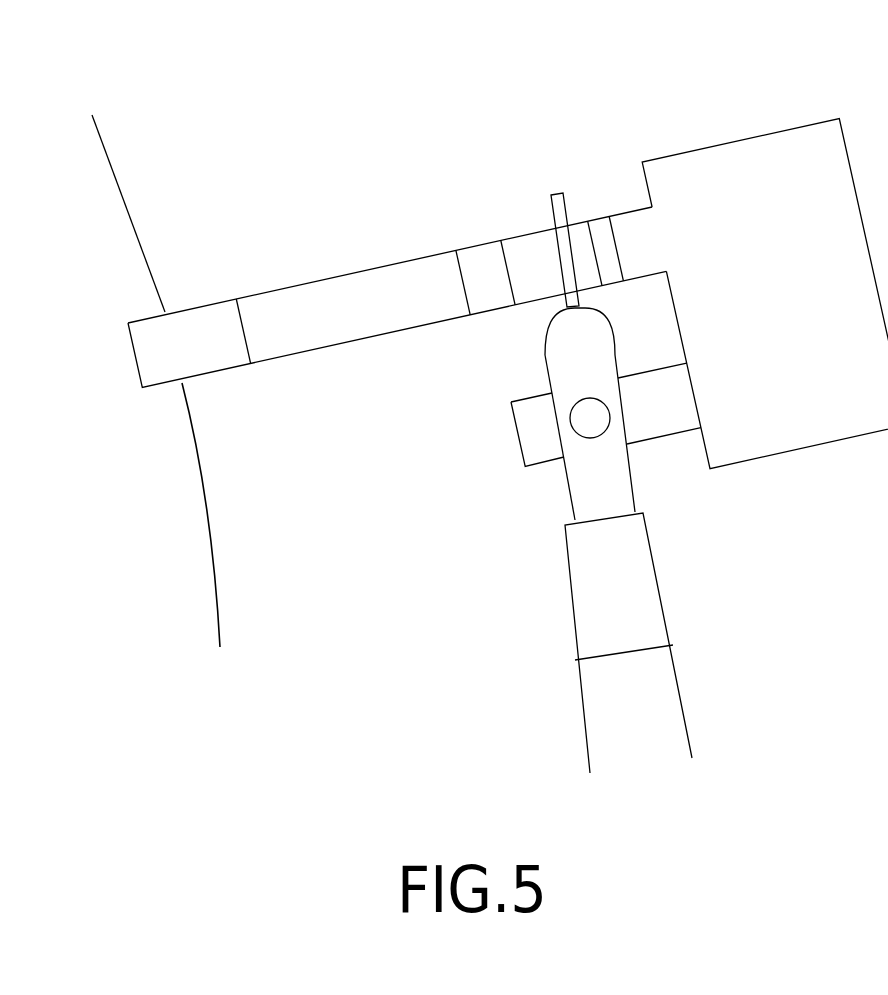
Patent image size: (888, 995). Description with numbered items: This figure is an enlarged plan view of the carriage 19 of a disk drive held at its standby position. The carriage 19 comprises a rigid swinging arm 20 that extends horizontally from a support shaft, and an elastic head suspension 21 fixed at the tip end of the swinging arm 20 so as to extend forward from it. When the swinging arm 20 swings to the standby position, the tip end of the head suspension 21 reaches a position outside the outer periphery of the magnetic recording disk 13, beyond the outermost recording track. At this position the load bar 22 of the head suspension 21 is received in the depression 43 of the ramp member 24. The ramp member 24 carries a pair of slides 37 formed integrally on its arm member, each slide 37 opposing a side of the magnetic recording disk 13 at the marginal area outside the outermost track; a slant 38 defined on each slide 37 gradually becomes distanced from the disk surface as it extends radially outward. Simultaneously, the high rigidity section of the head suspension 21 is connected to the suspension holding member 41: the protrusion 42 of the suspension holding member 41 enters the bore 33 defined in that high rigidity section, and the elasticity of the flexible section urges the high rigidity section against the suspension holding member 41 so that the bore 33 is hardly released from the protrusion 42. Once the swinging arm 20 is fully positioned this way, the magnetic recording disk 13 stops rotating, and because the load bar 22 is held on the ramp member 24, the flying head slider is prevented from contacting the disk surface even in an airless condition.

The magnetic recording disk 13 is at (133, 213).
The carriage 19 is at (683, 707).
The swinging arm 20 is at (680, 665).
The head suspension 21 is at (573, 500).
The load bar 22 is at (548, 209).
The ramp member 24 is at (735, 142).
The bore 33 is at (567, 420).
The slide 37 is at (293, 357).
The slant 38 is at (202, 320).
The suspension holding member 41 is at (667, 440).
The protrusion 42 is at (583, 398).
The depression 43 is at (523, 250).